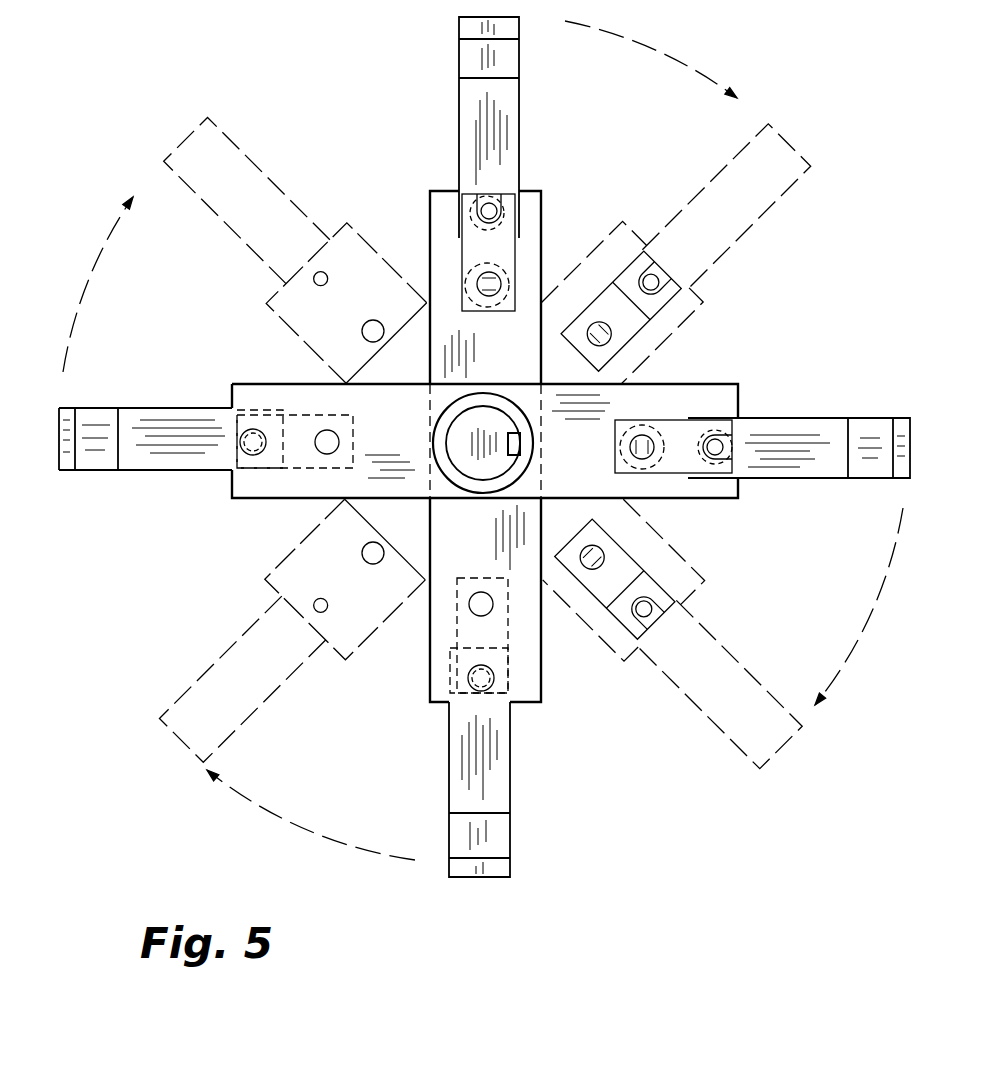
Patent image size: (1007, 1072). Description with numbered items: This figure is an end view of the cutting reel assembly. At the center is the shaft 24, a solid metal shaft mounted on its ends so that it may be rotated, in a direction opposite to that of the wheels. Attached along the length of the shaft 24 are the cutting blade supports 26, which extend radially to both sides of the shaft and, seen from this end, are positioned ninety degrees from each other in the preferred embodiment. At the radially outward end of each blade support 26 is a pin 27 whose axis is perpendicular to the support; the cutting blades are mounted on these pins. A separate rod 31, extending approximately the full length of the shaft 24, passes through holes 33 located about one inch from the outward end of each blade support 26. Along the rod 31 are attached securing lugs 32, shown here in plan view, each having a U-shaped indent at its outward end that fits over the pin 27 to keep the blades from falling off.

The shaft 24 is at (448, 411).
The cutting blade supports 26 is at (548, 230).
The pin 27 is at (240, 430).
The rod 31 is at (327, 454).
The securing lugs 32 is at (466, 257).
The holes 33 is at (655, 460).